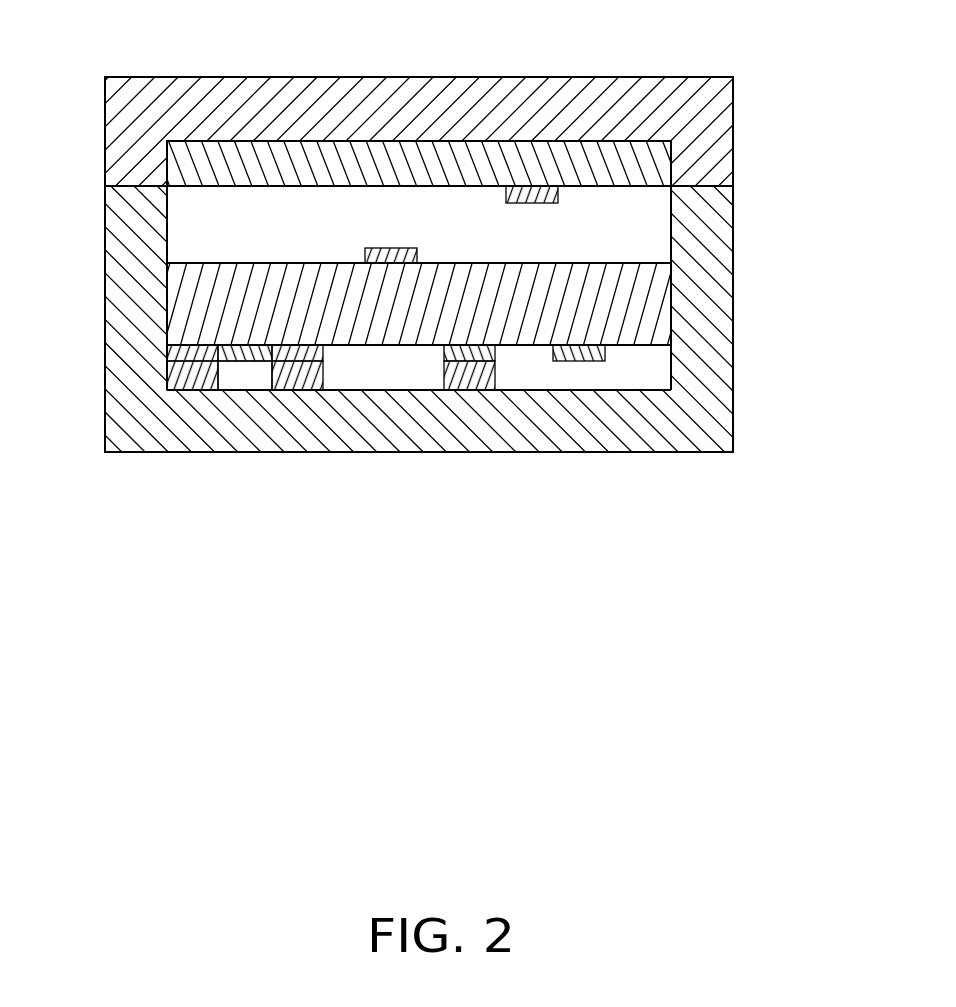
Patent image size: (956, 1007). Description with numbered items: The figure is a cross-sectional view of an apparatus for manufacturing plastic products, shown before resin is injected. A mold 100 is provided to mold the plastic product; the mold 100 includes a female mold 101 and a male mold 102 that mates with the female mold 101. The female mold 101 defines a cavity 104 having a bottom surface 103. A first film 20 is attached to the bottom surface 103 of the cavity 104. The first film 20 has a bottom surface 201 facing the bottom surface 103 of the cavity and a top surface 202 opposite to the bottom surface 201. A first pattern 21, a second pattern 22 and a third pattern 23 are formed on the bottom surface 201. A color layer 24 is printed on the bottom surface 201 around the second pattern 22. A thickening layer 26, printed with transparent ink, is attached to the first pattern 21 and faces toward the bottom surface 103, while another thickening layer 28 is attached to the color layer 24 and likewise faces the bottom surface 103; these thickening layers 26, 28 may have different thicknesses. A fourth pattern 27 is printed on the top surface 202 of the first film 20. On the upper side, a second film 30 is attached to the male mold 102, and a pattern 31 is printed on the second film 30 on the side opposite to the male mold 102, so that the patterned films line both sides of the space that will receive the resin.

The mold 100 is at (790, 150).
The female mold 101 is at (712, 215).
The male mold 102 is at (712, 162).
The bottom surface 103 is at (372, 390).
The cavity 104 is at (302, 220).
The second film 30 is at (200, 167).
The pattern 31 is at (525, 187).
The fourth pattern 27 is at (389, 256).
The first film 20 is at (200, 310).
The top surface 202 is at (187, 263).
The bottom surface 201 is at (357, 345).
The color layer 24 is at (183, 355).
The thickening layer 28 is at (185, 383).
The second pattern 22 is at (247, 353).
The first pattern 21 is at (488, 352).
The thickening layer 26 is at (470, 380).
The third pattern 23 is at (583, 355).